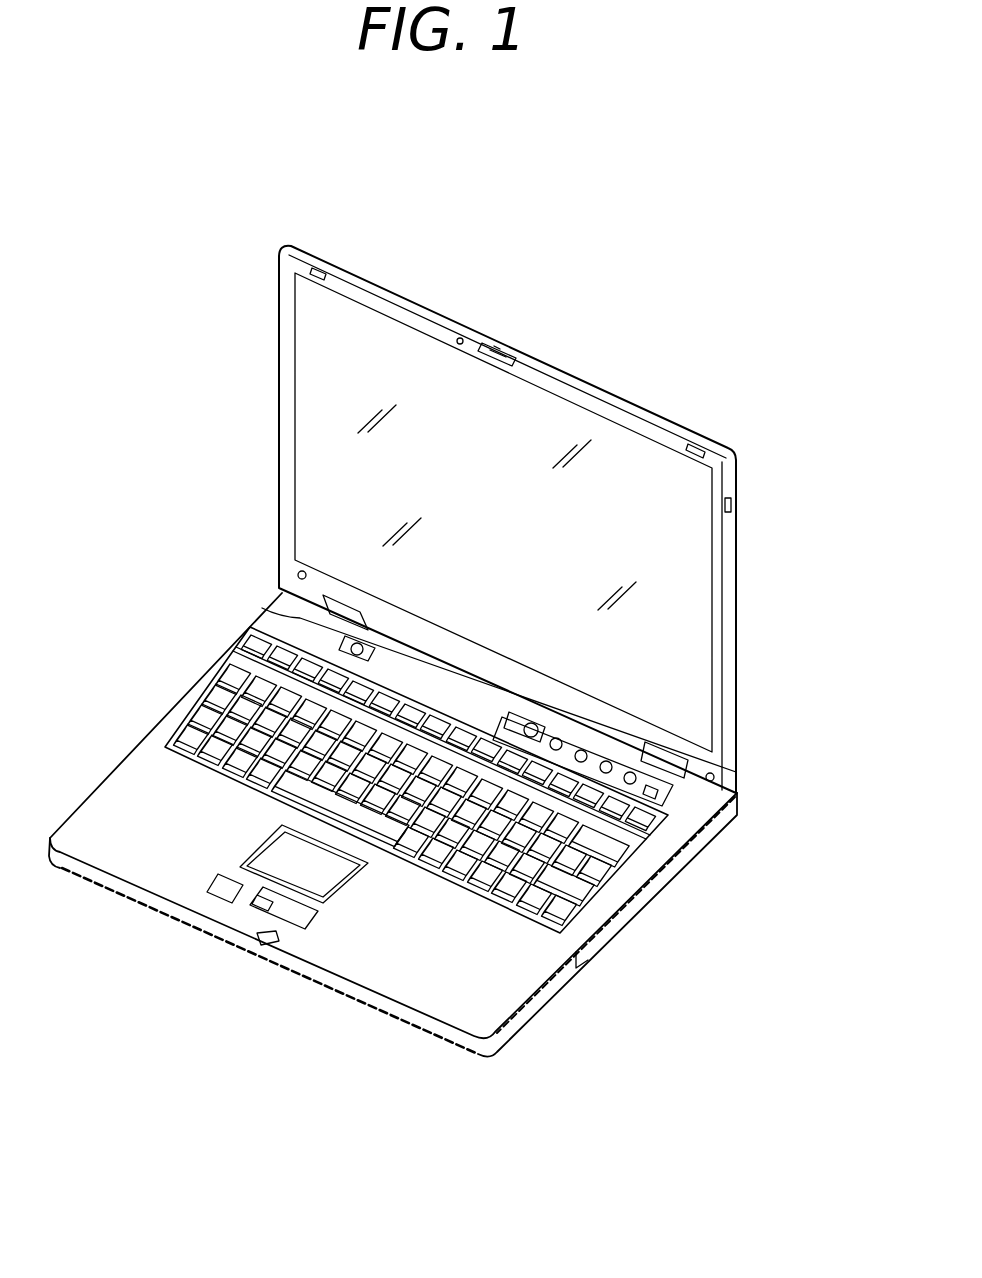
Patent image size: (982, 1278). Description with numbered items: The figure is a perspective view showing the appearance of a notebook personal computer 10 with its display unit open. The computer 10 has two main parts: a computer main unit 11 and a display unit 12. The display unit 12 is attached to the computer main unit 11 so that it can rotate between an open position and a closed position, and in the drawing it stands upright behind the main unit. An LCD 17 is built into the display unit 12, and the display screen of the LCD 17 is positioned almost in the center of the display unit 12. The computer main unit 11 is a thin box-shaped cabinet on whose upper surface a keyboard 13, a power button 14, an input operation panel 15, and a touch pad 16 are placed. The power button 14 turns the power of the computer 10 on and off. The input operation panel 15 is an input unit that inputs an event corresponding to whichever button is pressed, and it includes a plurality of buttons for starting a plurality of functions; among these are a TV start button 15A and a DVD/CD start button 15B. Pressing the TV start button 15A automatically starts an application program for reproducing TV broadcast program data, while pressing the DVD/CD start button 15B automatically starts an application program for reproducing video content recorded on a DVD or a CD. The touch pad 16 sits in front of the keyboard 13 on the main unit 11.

The notebook personal computer 10 is at (681, 1080).
The computer main unit 11 is at (540, 1007).
The display unit 12 is at (548, 519).
The keyboard 13 is at (553, 883).
The power button 14 is at (350, 640).
The input operation panel 15 is at (654, 714).
The TV start button 15A is at (531, 723).
The DVD/CD start button 15B is at (560, 738).
The touch pad 16 is at (272, 862).
The LCD 17 is at (690, 534).